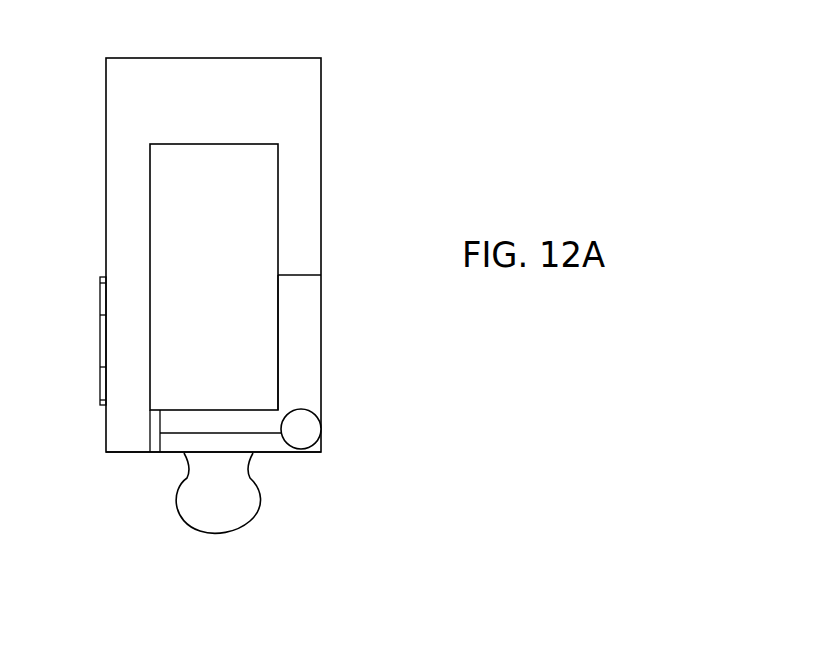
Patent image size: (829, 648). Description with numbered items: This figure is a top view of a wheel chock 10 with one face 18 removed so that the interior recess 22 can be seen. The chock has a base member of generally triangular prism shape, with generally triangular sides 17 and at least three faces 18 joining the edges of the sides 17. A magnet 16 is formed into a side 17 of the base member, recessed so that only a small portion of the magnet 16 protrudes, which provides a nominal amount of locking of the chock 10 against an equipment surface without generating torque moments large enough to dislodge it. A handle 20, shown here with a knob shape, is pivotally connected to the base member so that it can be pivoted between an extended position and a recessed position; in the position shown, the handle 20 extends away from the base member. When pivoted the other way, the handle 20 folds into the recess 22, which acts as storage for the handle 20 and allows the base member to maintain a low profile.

The wheel chock 10 is at (400, 92).
The magnet 16 is at (102, 307).
The side 17 is at (322, 247).
The face 18 is at (132, 455).
The handle 20 is at (255, 513).
The recess 22 is at (240, 313).